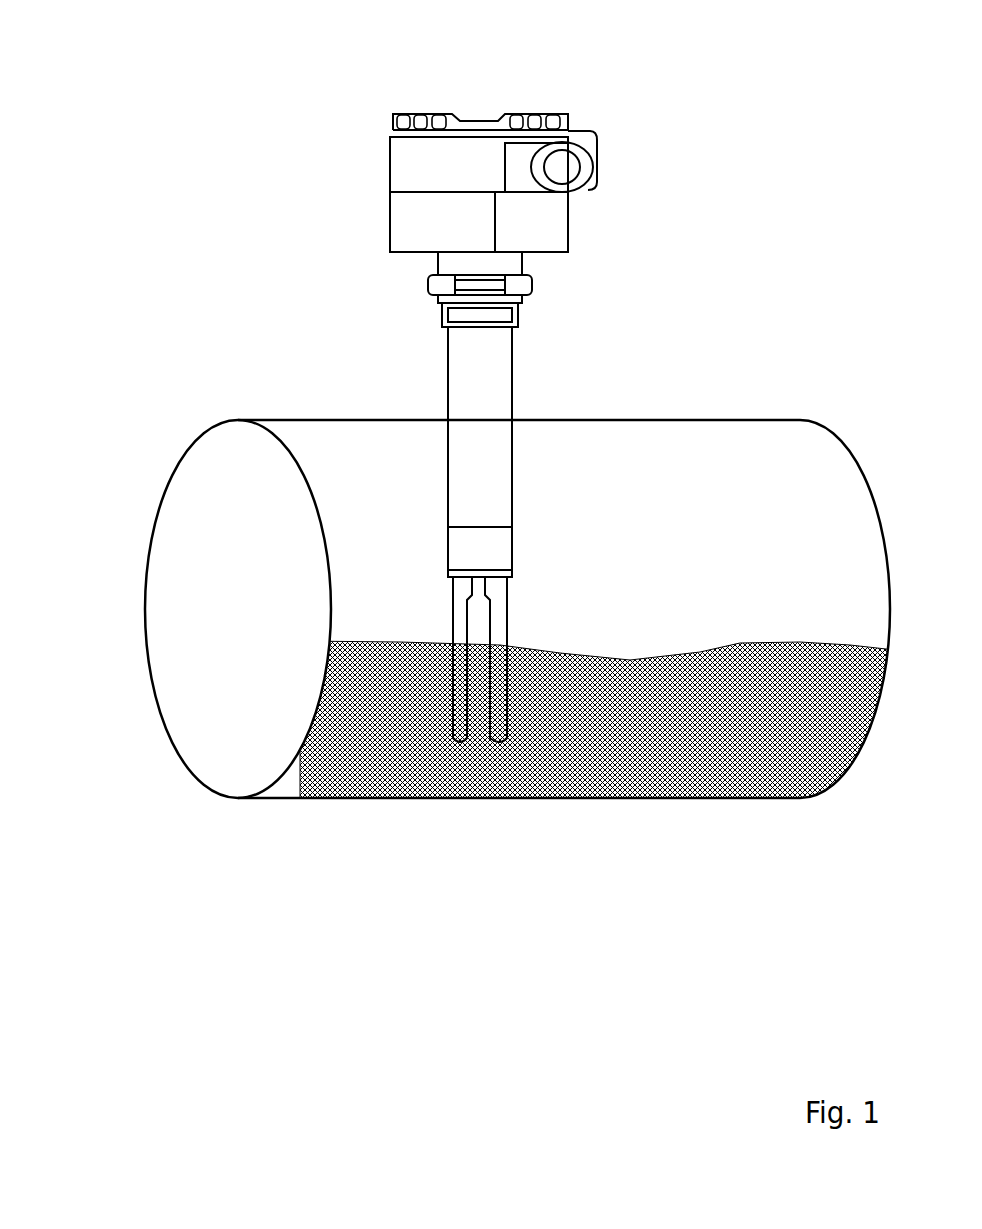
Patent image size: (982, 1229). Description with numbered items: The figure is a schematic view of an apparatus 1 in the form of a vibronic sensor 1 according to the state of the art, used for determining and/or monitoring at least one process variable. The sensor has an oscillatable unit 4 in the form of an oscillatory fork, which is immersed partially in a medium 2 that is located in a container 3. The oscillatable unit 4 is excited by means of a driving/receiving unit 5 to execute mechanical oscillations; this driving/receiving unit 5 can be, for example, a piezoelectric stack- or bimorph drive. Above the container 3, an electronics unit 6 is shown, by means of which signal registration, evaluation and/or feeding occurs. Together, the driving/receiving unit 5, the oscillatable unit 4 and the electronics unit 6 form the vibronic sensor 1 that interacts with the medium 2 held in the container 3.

The vibronic sensor 1 is at (50, 0).
The medium 2 is at (635, 725).
The container 3 is at (842, 777).
The oscillatable unit 4 is at (483, 667).
The driving/receiving unit 5 is at (452, 547).
The electronics unit 6 is at (545, 223).